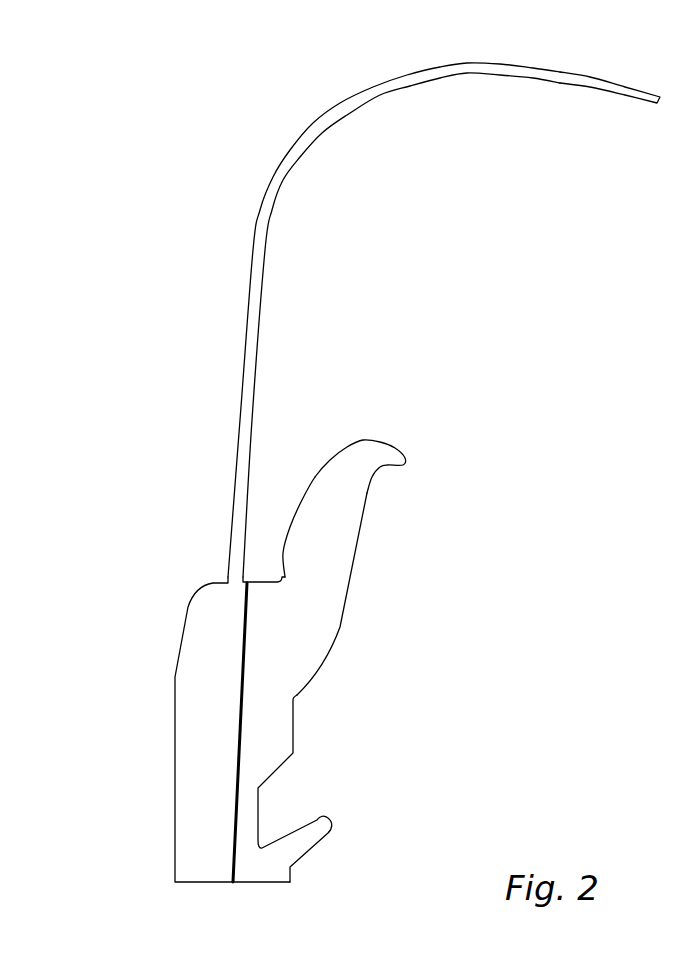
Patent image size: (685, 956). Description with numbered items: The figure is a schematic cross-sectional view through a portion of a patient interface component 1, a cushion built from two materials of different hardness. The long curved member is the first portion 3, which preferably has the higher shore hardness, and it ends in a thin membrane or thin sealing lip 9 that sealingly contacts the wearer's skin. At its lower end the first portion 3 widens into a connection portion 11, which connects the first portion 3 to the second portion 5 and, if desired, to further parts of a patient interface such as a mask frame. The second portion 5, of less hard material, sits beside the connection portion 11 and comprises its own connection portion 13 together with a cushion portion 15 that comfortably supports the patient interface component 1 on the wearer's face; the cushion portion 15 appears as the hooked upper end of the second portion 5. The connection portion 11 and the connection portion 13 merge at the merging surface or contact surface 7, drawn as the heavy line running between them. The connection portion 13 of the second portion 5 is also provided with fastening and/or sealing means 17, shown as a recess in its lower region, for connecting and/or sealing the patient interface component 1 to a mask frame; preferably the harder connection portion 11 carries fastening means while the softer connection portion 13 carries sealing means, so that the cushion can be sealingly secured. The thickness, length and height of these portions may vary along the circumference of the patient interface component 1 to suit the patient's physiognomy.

The patient interface component 1 is at (356, 468).
The first portion 3 is at (240, 373).
The second portion 5 is at (353, 498).
The merging surface 7 is at (228, 837).
The thin sealing lip 9 is at (590, 75).
The connection portion 11 is at (180, 710).
The connection portion 13 is at (318, 632).
The cushion portion 15 is at (373, 440).
The fastening and/or sealing means 17 is at (320, 795).